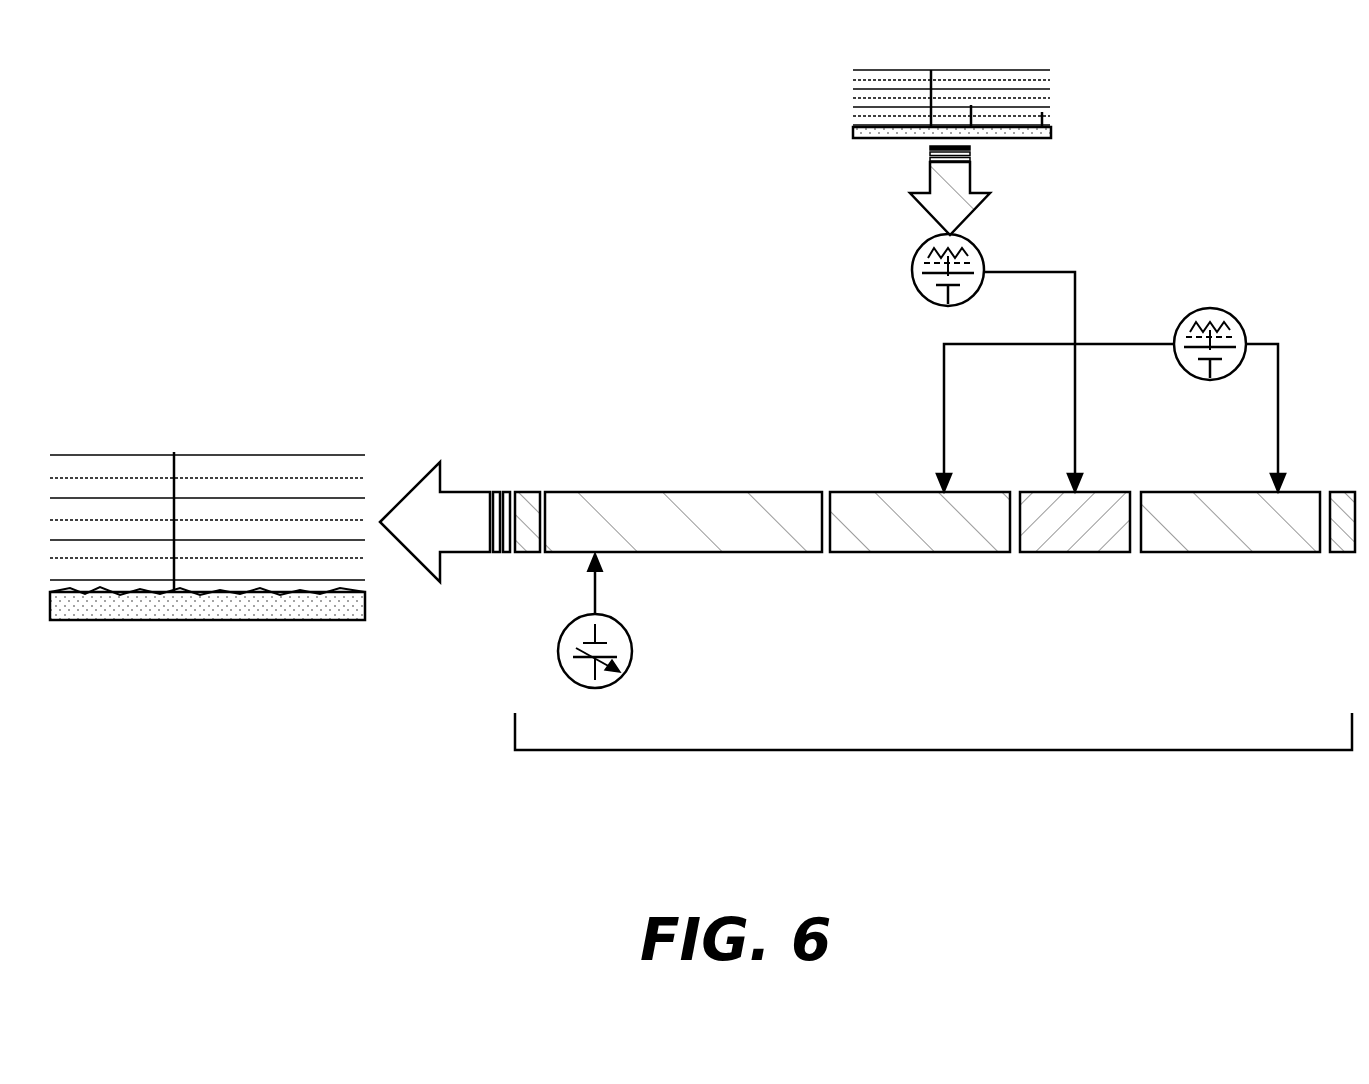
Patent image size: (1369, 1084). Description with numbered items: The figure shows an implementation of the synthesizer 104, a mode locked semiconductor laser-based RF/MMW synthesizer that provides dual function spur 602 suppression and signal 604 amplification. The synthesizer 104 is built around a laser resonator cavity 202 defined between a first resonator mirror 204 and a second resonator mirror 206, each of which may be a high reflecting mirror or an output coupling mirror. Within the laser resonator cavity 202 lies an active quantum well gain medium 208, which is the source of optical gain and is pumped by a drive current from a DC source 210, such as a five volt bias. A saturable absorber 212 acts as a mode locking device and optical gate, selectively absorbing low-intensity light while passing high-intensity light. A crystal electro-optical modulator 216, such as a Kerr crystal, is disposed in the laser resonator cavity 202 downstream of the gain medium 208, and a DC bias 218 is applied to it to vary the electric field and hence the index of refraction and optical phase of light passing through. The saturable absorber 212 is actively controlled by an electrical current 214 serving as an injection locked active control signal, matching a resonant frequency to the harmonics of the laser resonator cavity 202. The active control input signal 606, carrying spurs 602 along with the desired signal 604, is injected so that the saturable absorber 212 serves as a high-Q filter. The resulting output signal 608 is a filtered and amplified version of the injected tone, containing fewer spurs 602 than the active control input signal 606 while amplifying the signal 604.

The synthesizer 104 is at (448, 375).
The laser resonator cavity 202 is at (933, 752).
The first resonator mirror 204 is at (1341, 554).
The second resonator mirror 206 is at (532, 554).
The gain medium 208 is at (965, 554).
The DC source 210 is at (1246, 330).
The saturable absorber 212 is at (1092, 554).
The electrical current 214 is at (912, 272).
The crystal electro-optical modulator 216 is at (664, 491).
The DC bias 218 is at (606, 689).
The spur 602 is at (972, 107).
The signal 604 is at (929, 91).
The active control input signal 606 is at (982, 205).
The output signal 608 is at (440, 583).